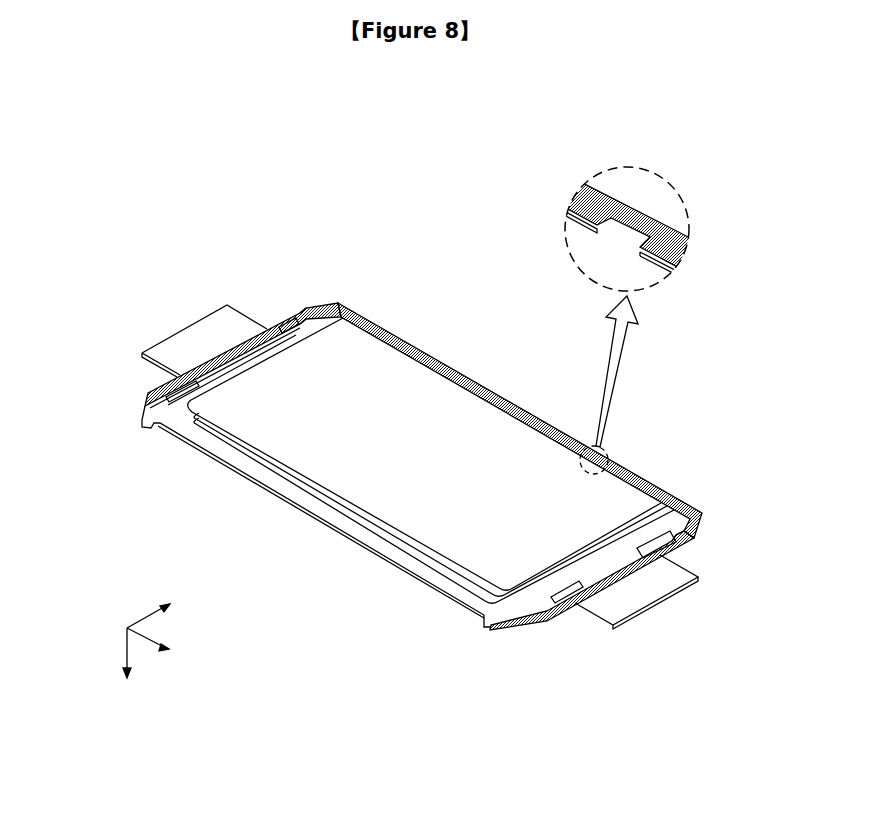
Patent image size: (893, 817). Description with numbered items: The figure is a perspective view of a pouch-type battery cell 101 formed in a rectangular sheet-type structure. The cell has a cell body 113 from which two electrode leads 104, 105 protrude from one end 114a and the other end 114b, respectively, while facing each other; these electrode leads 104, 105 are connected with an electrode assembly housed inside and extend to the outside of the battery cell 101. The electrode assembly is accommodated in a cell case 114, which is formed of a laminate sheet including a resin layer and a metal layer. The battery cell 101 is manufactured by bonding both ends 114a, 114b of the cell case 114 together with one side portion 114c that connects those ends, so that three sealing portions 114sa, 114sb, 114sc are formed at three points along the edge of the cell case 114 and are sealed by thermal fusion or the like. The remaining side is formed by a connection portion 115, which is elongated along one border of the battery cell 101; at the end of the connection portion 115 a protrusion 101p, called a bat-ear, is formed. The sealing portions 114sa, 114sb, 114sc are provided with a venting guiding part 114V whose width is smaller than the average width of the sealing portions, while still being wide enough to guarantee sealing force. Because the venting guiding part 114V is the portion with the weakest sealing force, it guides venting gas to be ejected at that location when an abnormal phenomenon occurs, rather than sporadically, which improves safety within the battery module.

The battery cell 101 is at (113, 177).
The protrusion 101p is at (148, 421).
The electrode lead 104 is at (208, 334).
The electrode lead 105 is at (662, 598).
The cell body 113 is at (400, 378).
The cell case 114 is at (689, 504).
The one end of the cell case 114a is at (315, 316).
The other end of the cell case 114b is at (523, 612).
The one side portion 114c is at (498, 397).
The sealing portion 114sa is at (293, 316).
The sealing portion 114sb is at (694, 539).
The sealing portion 114sc is at (611, 456).
The venting guiding part 114V is at (643, 218).
The connection portion 115 is at (352, 528).